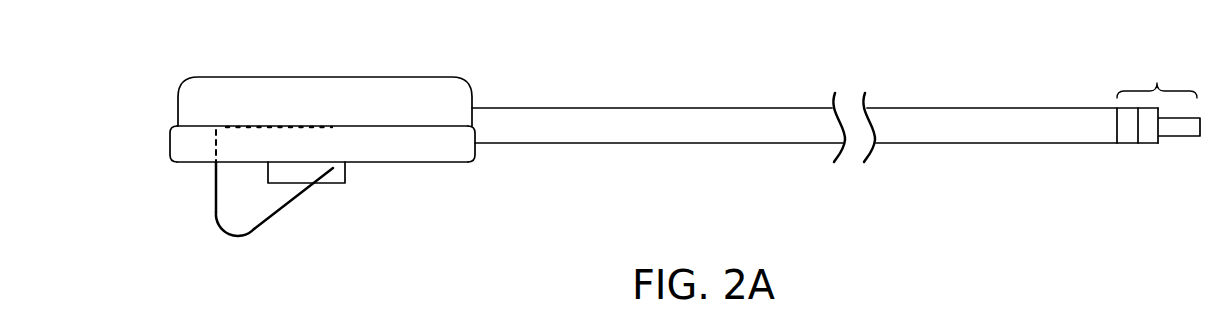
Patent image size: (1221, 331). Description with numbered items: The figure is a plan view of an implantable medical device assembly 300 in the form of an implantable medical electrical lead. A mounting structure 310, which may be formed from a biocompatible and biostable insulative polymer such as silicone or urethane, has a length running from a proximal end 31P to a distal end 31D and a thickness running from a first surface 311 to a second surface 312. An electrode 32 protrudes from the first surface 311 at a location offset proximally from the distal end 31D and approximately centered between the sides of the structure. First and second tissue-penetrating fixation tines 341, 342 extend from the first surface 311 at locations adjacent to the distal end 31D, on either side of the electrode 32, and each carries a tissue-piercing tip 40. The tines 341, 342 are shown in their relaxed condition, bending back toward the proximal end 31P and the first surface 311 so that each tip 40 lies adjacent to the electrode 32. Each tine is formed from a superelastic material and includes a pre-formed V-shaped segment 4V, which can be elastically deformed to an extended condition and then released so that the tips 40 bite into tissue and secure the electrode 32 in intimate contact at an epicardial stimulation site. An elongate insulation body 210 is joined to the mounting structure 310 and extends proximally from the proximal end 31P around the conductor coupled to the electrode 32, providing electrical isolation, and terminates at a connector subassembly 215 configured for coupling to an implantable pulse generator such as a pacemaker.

The mounting structure 310 is at (325, 79).
The second surface 312 is at (302, 75).
The first surface 311 is at (317, 149).
The distal end 31D is at (168, 145).
The proximal end 31P is at (478, 145).
The electrode 32 is at (276, 194).
The tissue-piercing tip 40 is at (332, 176).
The first tissue-penetrating fixation tine 341 is at (236, 208).
The second tissue-penetrating fixation tine 342 is at (236, 208).
The pre-formed V-shaped segment 4V is at (237, 256).
The elongate insulation body 210 is at (888, 98).
The implantable medical device assembly 300 is at (836, 122).
The connector subassembly 215 is at (1158, 103).